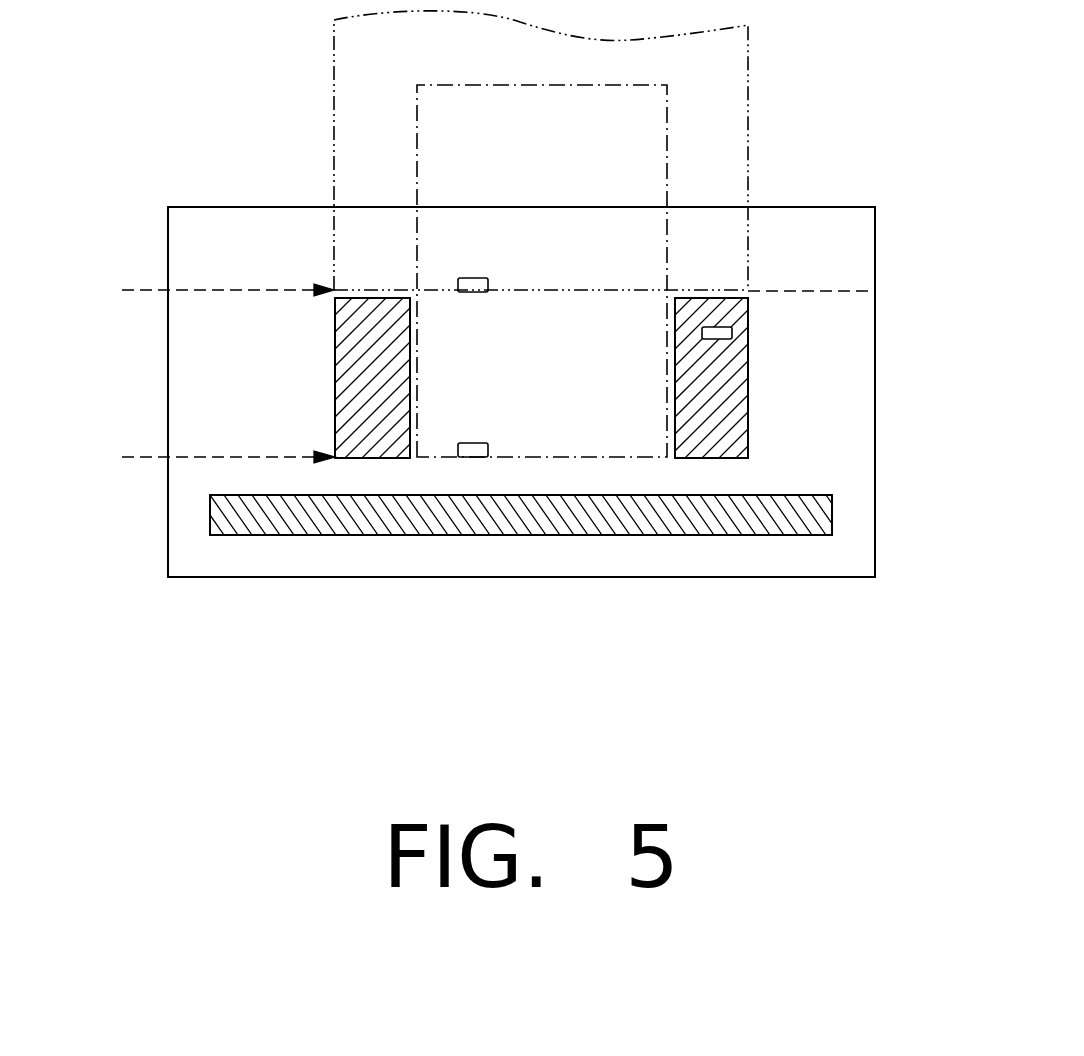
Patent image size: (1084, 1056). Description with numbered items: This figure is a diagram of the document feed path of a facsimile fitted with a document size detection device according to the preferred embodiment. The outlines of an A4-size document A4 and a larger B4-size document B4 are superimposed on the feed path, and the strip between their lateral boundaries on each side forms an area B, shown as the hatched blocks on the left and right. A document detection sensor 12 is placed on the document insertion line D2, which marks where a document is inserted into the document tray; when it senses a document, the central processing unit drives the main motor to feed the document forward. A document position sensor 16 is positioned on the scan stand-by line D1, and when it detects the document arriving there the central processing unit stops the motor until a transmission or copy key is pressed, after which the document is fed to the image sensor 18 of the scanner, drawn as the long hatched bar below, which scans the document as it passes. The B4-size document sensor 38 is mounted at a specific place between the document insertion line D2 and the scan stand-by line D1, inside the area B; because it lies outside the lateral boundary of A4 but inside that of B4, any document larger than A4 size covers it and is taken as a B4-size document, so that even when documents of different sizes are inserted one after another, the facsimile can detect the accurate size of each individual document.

The document detection sensor 12 is at (472, 278).
The document position sensor 16 is at (475, 443).
The image sensor 18 is at (823, 512).
The B4-size document sensor 38 is at (733, 327).
The area B is at (347, 367).
The B4-size document B4 is at (370, 83).
The A4-size document A4 is at (432, 168).
The scan stand-by line D1 is at (206, 457).
The document insertion line D2 is at (472, 292).